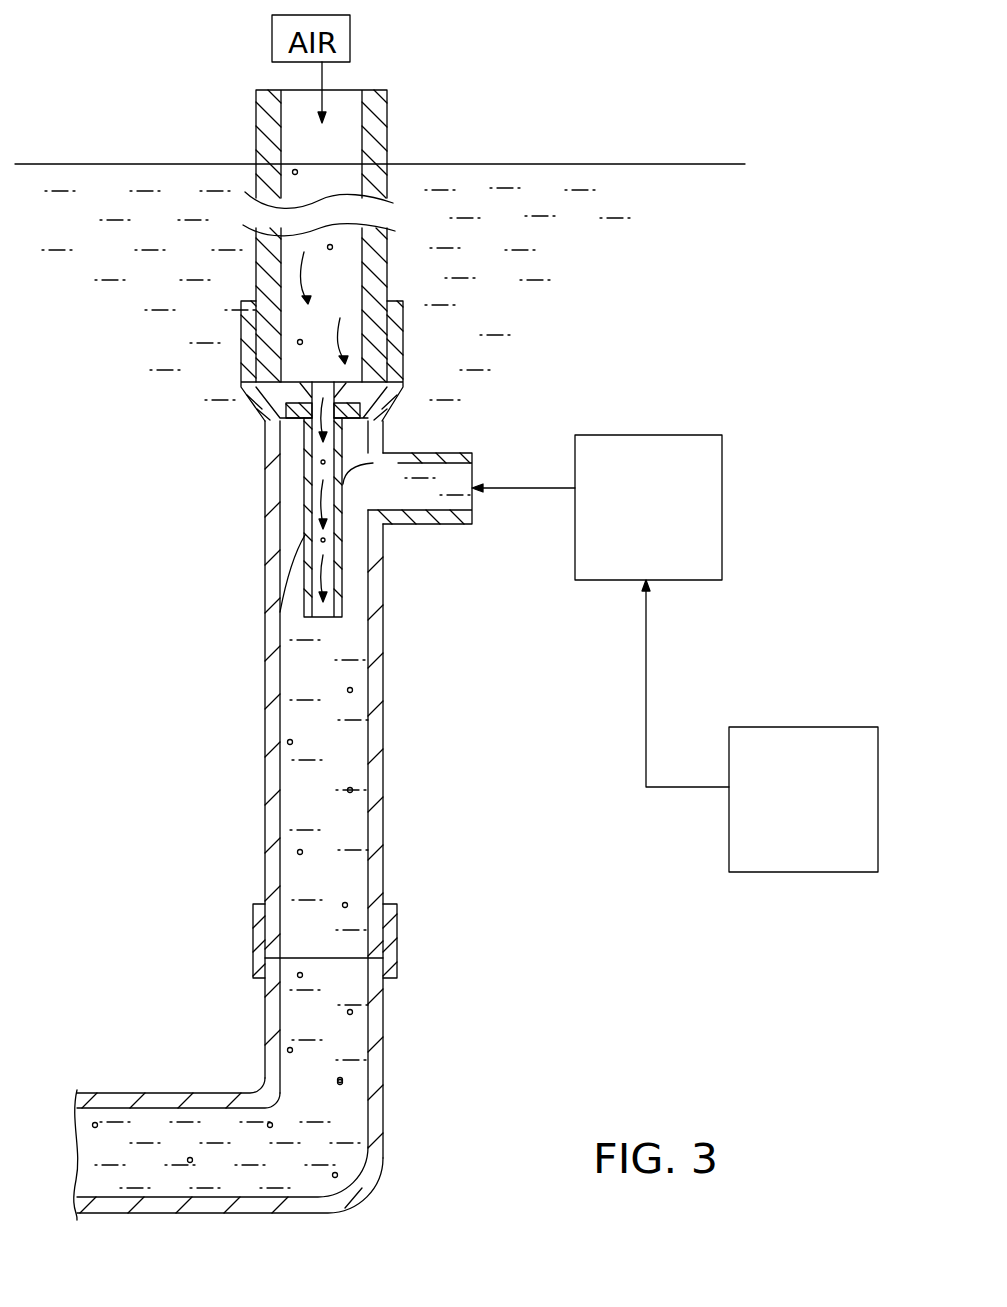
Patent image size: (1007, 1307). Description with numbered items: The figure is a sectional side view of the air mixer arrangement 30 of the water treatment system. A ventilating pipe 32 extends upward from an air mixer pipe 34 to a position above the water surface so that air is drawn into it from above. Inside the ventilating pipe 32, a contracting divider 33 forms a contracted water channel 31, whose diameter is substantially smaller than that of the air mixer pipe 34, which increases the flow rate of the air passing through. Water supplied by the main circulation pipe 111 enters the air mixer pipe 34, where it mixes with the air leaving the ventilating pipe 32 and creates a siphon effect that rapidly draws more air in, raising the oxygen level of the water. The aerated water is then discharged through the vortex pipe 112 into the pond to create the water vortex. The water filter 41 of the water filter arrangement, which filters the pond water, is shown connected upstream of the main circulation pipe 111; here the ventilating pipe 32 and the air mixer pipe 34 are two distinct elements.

The air mixer arrangement 30 is at (578, 335).
The contracted water channel 31 is at (325, 608).
The ventilating pipe 32 is at (270, 263).
The contracting divider 33 is at (390, 405).
The air mixer pipe 34 is at (375, 603).
The water filter 41 is at (760, 726).
The main circulation pipe 111 is at (597, 507).
The vortex pipe 112 is at (150, 1103).